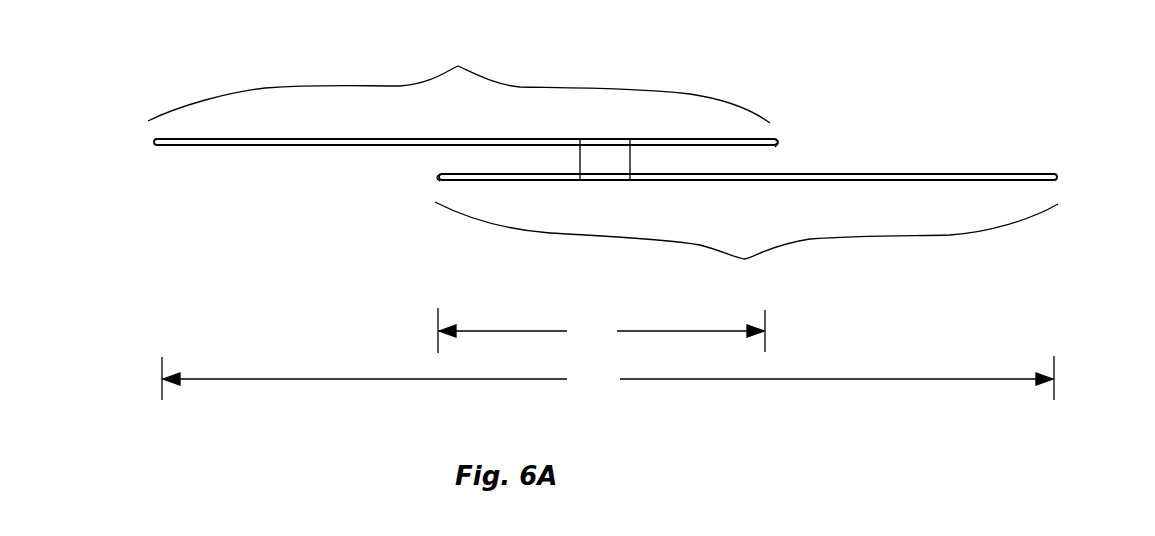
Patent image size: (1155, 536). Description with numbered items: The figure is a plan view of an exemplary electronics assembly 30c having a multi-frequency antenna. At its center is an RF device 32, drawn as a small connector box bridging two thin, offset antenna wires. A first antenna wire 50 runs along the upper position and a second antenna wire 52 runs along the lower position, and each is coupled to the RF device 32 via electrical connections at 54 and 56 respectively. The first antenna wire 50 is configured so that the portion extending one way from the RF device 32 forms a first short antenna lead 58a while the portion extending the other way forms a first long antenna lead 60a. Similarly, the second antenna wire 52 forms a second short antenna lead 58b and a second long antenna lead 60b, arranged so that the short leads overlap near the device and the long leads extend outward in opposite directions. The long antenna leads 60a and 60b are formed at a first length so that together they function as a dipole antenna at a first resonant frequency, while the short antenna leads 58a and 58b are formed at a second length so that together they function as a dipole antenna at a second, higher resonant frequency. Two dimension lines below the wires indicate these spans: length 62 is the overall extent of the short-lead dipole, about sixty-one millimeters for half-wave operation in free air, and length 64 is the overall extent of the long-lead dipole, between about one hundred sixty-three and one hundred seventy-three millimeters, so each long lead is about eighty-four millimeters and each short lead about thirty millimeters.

The electronics assembly 30c is at (880, 87).
The RF device 32 is at (631, 155).
The first antenna wire 50 is at (459, 78).
The second antenna wire 52 is at (746, 248).
The electrical connection 54 is at (600, 138).
The electrical connection 56 is at (600, 181).
The first short antenna lead 58a is at (776, 142).
The second short antenna lead 58b is at (440, 176).
The first long antenna lead 60a is at (235, 146).
The second long antenna lead 60b is at (930, 174).
The length 62 is at (601, 330).
The length 64 is at (608, 378).